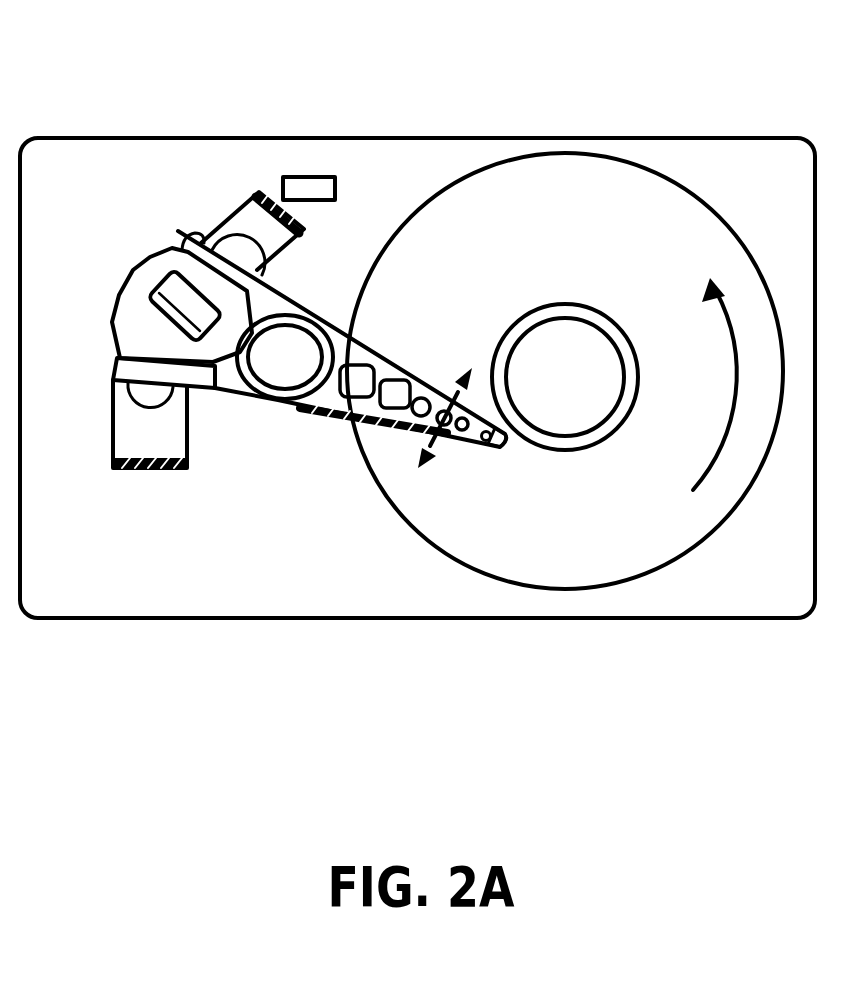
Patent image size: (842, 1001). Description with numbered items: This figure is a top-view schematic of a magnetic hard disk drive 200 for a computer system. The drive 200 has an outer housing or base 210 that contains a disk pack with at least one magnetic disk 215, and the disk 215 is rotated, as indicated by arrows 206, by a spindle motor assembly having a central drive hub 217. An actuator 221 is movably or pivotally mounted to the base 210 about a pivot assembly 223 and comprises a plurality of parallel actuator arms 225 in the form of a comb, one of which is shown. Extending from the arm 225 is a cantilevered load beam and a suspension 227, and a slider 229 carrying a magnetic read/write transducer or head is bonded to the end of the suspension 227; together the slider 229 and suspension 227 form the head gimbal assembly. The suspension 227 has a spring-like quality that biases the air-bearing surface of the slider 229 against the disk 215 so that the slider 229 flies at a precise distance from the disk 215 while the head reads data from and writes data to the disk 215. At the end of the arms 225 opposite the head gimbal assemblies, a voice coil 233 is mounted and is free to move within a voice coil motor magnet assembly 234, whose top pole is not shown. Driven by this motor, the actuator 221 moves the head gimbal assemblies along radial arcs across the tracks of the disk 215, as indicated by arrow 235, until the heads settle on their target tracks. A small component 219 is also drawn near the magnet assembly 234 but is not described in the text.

The magnetic hard disk drive 200 is at (388, 47).
The arrows 206 is at (743, 385).
The outer housing or base 210 is at (453, 618).
The magnetic disk 215 is at (690, 552).
The central drive hub 217 is at (598, 314).
The connector 219 is at (335, 185).
The actuator 221 is at (299, 369).
The pivot assembly 223 is at (272, 400).
The actuator arm 225 is at (350, 353).
The suspension 227 is at (422, 387).
The slider 229 is at (483, 447).
The voice coil 233 is at (140, 258).
The voice coil motor magnet assembly 234 is at (240, 220).
The arrow 235 is at (451, 378).